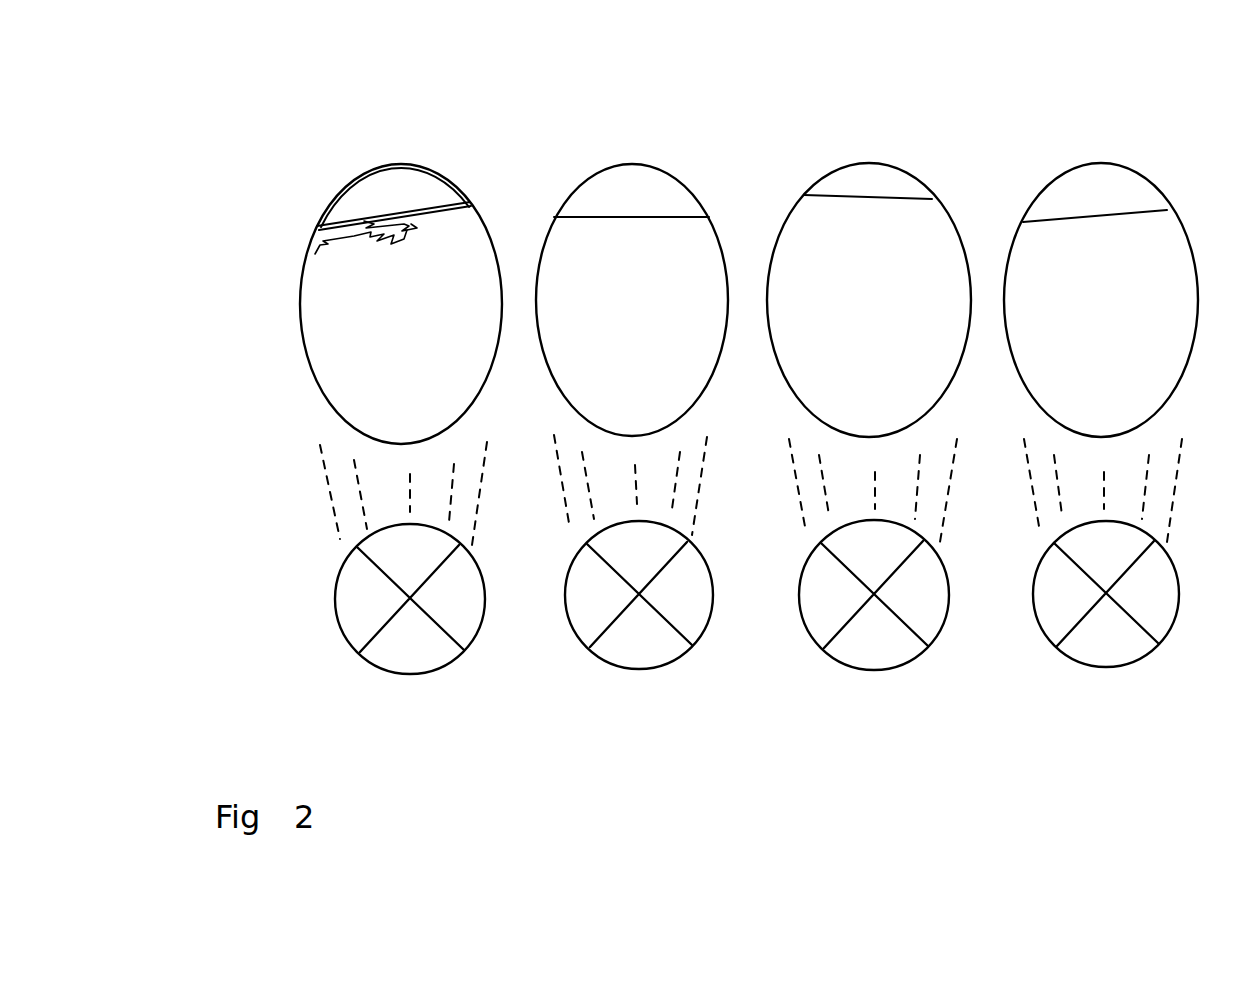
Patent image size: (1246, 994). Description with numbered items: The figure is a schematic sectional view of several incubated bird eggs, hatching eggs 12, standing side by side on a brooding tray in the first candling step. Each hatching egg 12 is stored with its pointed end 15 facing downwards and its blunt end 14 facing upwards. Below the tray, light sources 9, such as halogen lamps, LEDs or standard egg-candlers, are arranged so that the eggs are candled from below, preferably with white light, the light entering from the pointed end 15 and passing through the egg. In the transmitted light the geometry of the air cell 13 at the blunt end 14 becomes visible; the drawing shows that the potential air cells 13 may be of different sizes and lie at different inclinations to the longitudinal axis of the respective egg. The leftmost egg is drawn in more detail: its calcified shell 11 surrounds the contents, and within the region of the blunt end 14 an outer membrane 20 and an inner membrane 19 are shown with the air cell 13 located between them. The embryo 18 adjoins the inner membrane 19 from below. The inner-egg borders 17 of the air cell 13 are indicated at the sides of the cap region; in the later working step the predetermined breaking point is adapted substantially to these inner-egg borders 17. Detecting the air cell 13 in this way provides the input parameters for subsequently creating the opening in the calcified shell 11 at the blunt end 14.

The light source 9 is at (340, 627).
The calcified shell 11 is at (327, 398).
The hatching egg 12 is at (292, 348).
The air cell 13 is at (368, 197).
The blunt end 14 is at (383, 167).
The pointed end 15 is at (403, 442).
The inner-egg border 17 is at (463, 204).
The embryo 18 is at (337, 237).
The inner membrane 19 is at (433, 207).
The outer membrane 20 is at (372, 163).